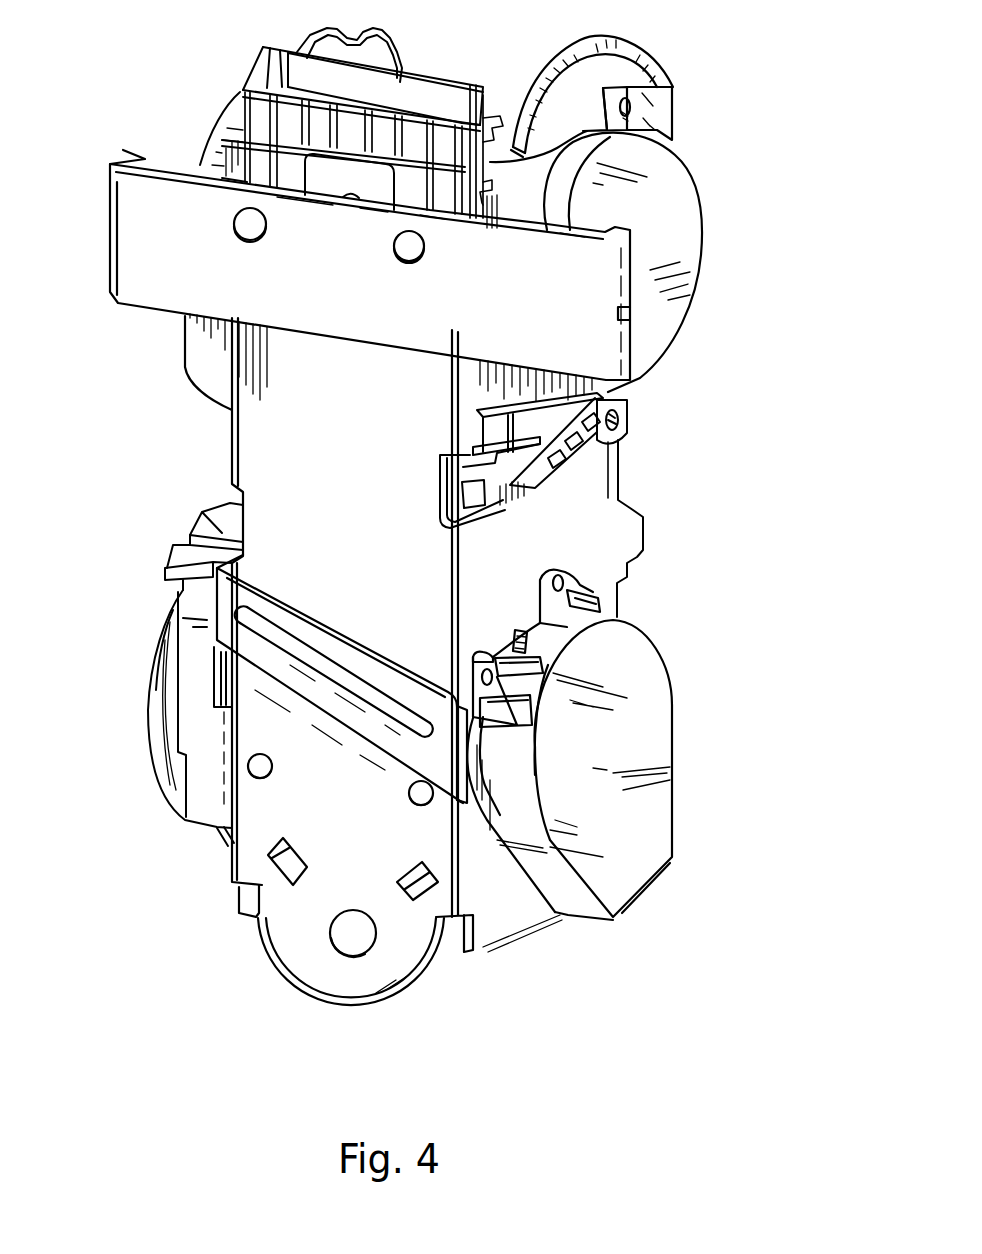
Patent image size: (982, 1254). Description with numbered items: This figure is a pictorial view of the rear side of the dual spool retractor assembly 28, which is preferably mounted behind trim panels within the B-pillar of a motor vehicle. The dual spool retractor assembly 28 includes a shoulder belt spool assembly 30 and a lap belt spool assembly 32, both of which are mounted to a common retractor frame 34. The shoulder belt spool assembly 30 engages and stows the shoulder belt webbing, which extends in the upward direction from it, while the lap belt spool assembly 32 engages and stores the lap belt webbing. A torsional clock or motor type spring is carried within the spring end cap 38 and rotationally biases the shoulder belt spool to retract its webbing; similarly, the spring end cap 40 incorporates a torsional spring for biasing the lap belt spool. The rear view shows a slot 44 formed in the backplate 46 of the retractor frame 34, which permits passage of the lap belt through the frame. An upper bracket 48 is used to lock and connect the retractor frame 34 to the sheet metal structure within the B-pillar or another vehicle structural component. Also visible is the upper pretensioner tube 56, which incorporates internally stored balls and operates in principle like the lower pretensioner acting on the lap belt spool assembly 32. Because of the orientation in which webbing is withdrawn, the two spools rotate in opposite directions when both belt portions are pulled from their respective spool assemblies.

The dual spool retractor assembly 28 is at (713, 352).
The shoulder belt spool assembly 30 is at (680, 231).
The lap belt spool assembly 32 is at (640, 722).
The retractor frame 34 is at (582, 498).
The spring end cap 38 is at (220, 138).
The spring end cap 40 is at (628, 835).
The slot 44 is at (275, 620).
The backplate 46 is at (280, 425).
The upper bracket 48 is at (175, 225).
The upper pretensioner tube 56 is at (607, 60).